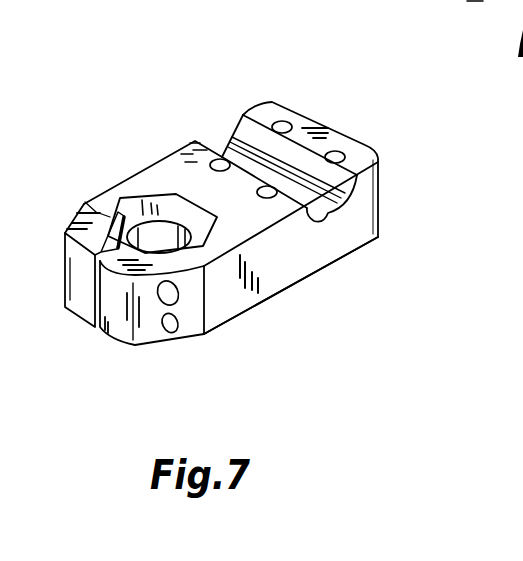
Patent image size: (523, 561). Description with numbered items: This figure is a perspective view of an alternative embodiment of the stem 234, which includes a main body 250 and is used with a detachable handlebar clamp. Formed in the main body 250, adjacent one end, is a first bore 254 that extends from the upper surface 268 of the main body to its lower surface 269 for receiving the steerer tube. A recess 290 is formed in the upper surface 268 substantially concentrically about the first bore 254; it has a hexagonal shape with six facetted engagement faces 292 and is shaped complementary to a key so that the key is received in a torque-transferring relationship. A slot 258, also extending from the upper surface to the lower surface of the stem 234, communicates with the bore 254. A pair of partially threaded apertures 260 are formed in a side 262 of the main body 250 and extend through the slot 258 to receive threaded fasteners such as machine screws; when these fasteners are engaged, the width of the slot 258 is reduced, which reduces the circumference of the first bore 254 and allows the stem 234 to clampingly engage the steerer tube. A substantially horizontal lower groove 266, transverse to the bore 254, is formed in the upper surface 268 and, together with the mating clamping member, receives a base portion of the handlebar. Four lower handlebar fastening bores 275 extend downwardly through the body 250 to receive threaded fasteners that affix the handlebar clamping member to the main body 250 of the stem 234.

The stem 234 is at (169, 105).
The main body 250 is at (267, 277).
The first bore 254 is at (118, 213).
The slot 258 is at (102, 280).
The partially threaded apertures 260 is at (171, 314).
The side 262 is at (213, 302).
The lower groove 266 is at (340, 203).
The upper surface 268 is at (195, 139).
The lower surface 269 is at (313, 266).
The lower handlebar fastening bores 275 is at (285, 121).
The recess 290 is at (204, 243).
The facetted engagement faces 292 is at (185, 200).